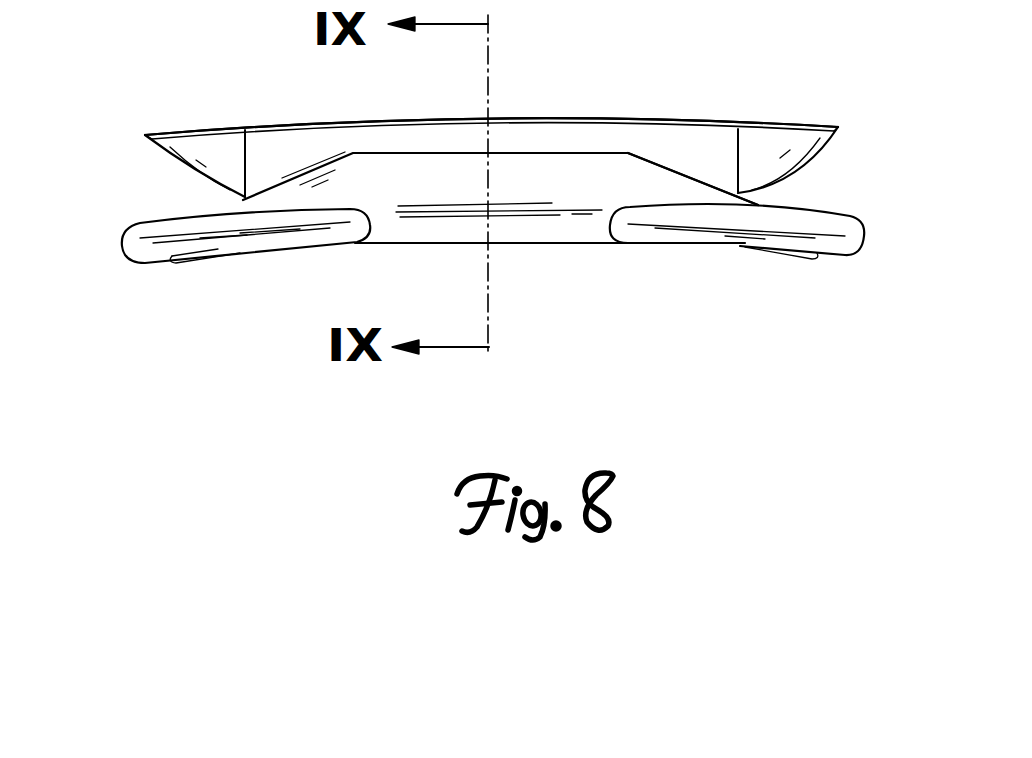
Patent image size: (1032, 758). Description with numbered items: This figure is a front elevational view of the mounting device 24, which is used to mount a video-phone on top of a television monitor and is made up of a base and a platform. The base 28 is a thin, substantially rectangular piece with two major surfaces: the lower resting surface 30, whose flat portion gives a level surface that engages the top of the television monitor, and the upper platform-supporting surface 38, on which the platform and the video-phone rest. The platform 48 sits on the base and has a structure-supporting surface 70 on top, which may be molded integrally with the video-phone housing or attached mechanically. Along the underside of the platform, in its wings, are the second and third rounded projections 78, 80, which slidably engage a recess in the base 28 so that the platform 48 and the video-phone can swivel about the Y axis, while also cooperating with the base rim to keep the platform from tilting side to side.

The mounting device 24 is at (152, 67).
The base 28 is at (567, 217).
The resting surface 30 is at (277, 246).
The platform-supporting surface 38 is at (762, 191).
The platform 48 is at (727, 99).
The structure-supporting surface 70 is at (575, 118).
The second rounded projection 78 is at (170, 157).
The third rounded projection 80 is at (840, 131).